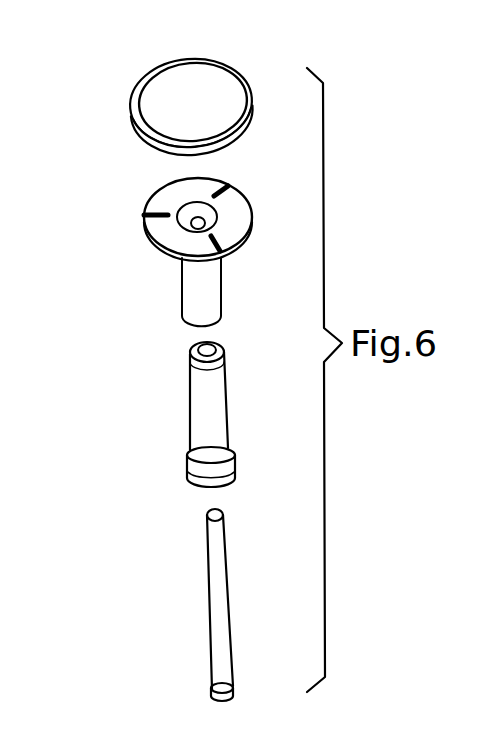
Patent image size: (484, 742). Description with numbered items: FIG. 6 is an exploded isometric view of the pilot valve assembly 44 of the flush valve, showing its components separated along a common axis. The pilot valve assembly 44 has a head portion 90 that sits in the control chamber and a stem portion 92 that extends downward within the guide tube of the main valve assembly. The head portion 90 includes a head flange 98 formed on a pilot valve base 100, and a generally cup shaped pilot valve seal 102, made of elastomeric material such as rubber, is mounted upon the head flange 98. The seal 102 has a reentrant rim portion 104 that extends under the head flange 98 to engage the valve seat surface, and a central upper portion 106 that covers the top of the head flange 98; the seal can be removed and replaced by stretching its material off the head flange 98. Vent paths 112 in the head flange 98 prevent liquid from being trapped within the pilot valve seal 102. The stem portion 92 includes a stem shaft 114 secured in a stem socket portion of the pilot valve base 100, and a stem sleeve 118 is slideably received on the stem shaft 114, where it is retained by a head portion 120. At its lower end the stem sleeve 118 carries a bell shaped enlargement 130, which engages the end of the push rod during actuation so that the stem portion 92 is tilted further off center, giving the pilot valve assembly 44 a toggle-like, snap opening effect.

The pilot valve assembly 44 is at (121, 58).
The head portion 90 is at (90, 162).
The stem portion 92 is at (99, 539).
The head flange 98 is at (178, 248).
The pilot valve base 100 is at (252, 230).
The pilot valve seal 102 is at (210, 72).
The reentrant rim portion 104 is at (250, 134).
The central upper portion 106 is at (202, 118).
The vent paths 112 is at (146, 212).
The stem shaft 114 is at (218, 598).
The stem sleeve 118 is at (200, 405).
The head portion 120 is at (214, 698).
The bell shaped enlargement 130 is at (195, 470).